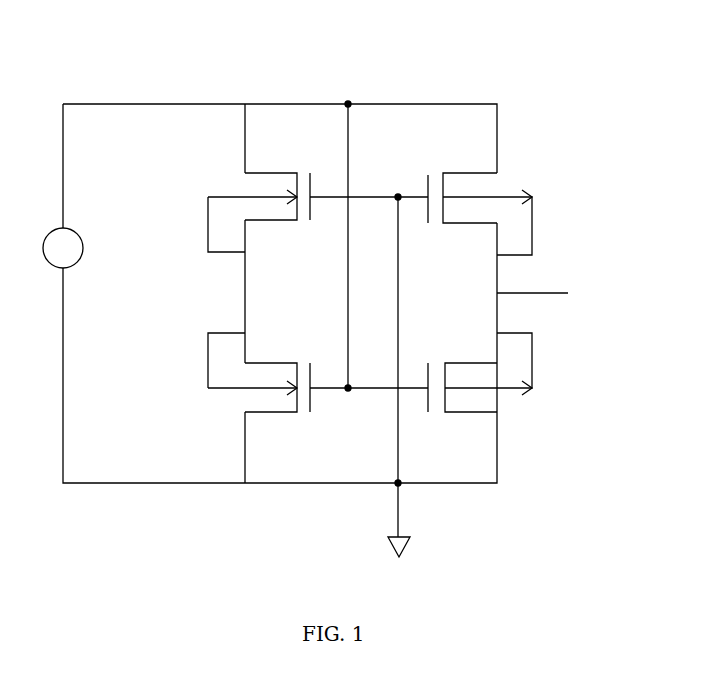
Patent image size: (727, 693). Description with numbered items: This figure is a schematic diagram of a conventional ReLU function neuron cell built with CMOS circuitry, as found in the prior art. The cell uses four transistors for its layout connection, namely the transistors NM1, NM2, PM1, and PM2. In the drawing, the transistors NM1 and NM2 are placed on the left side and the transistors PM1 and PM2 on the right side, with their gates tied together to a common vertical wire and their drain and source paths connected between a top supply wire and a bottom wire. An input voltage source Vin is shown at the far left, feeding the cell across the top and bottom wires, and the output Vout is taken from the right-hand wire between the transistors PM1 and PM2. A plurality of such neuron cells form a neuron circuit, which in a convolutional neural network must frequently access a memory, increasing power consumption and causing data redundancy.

The transistor NM1 is at (267, 212).
The transistor NM2 is at (265, 374).
The transistor PM1 is at (447, 214).
The transistor PM2 is at (449, 378).
The input voltage source Vin is at (76, 257).
The output voltage terminal Vout is at (555, 295).